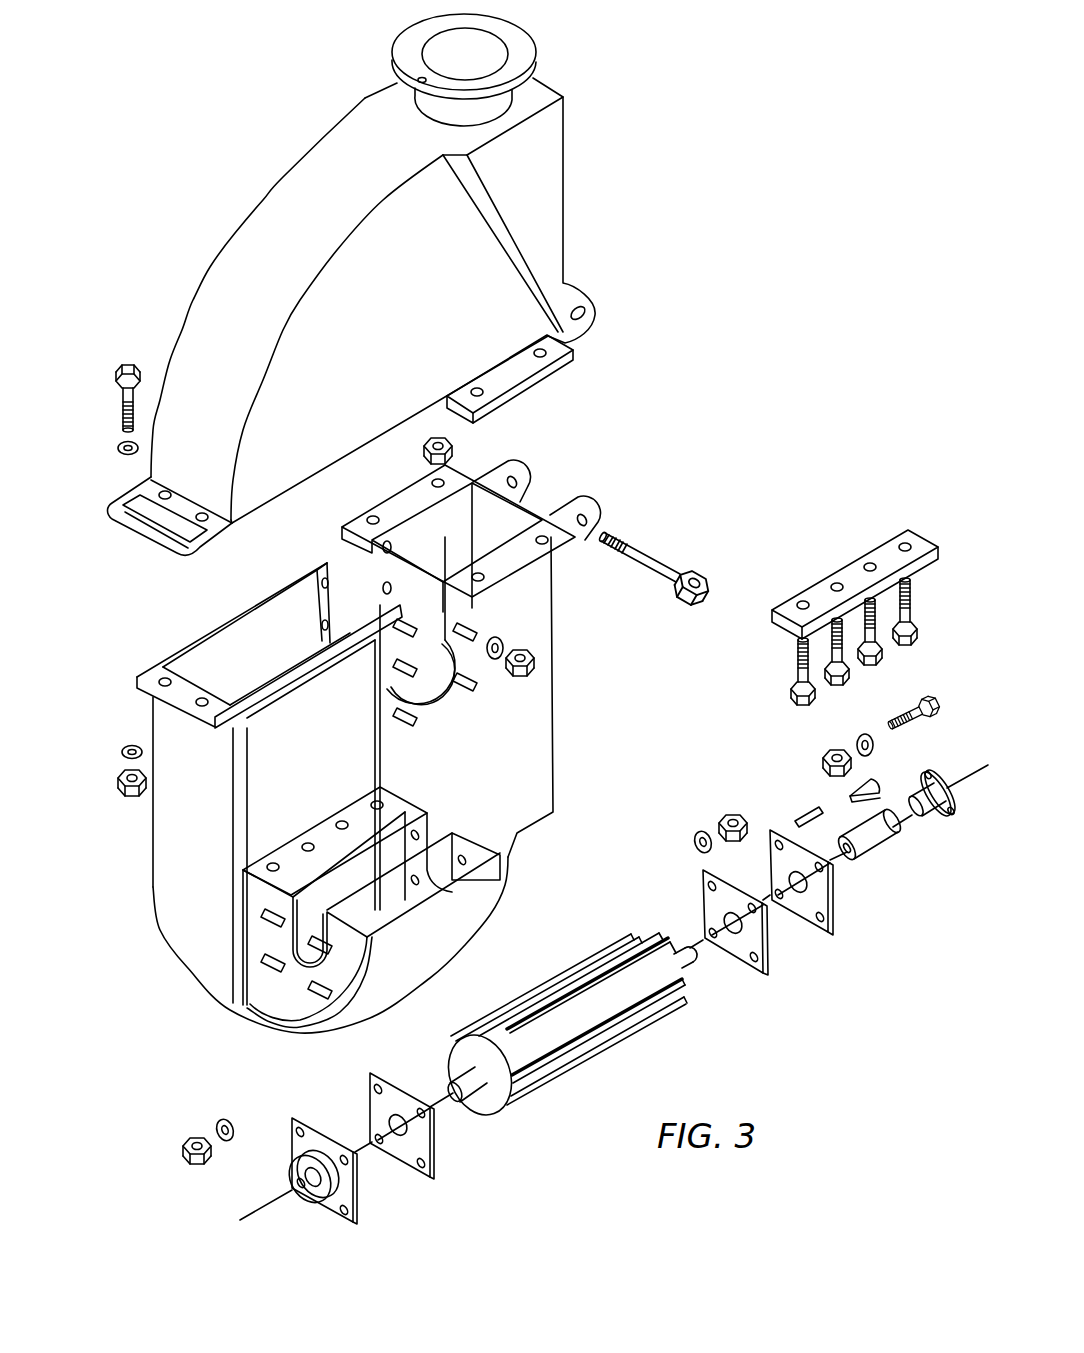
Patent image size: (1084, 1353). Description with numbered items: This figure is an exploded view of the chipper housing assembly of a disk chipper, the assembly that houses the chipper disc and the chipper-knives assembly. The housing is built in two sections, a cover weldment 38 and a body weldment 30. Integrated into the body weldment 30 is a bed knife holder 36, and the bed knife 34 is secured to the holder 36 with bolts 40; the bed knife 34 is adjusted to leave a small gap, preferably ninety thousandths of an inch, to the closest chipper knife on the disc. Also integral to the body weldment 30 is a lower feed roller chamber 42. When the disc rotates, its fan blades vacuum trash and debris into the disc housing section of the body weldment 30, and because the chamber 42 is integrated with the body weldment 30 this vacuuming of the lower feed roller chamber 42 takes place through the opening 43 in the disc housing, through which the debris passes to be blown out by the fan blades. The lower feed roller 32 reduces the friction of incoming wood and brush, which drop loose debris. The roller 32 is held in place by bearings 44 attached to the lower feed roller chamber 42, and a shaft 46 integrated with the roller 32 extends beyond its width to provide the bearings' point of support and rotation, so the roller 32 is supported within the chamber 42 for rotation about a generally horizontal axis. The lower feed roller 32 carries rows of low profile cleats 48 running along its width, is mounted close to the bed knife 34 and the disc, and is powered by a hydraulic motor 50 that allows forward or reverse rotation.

The body weldment 30 is at (197, 930).
The lower feed roller 32 is at (617, 1055).
The bed knife 34 is at (793, 602).
The bed knife holder 36 is at (212, 978).
The cover weldment 38 is at (282, 200).
The bolts 40 is at (798, 665).
The lower feed roller chamber 42 is at (283, 1007).
The opening 43 is at (363, 853).
The bearings 44 is at (795, 917).
The shaft 46 is at (680, 947).
The low profile cleats 48 is at (517, 1113).
The hydraulic motor 50 is at (925, 817).